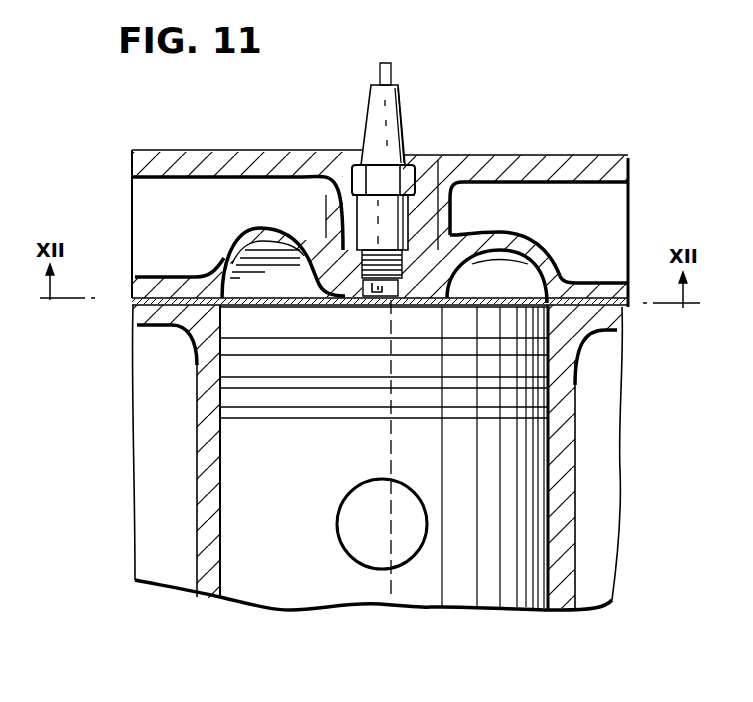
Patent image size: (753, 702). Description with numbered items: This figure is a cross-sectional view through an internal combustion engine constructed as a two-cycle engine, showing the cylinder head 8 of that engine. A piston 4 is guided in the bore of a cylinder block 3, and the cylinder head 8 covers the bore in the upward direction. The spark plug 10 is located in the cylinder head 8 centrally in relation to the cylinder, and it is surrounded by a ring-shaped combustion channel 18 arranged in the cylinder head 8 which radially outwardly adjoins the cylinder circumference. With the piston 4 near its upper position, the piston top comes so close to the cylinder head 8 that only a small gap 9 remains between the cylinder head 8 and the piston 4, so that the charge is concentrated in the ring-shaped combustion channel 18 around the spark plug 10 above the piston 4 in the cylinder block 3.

The cylinder block 3 is at (205, 513).
The piston 4 is at (265, 588).
The cylinder head 8 is at (590, 157).
The gap 9 is at (411, 298).
The spark plug 10 is at (400, 111).
The ring-shaped combustion channel 18 is at (237, 257).